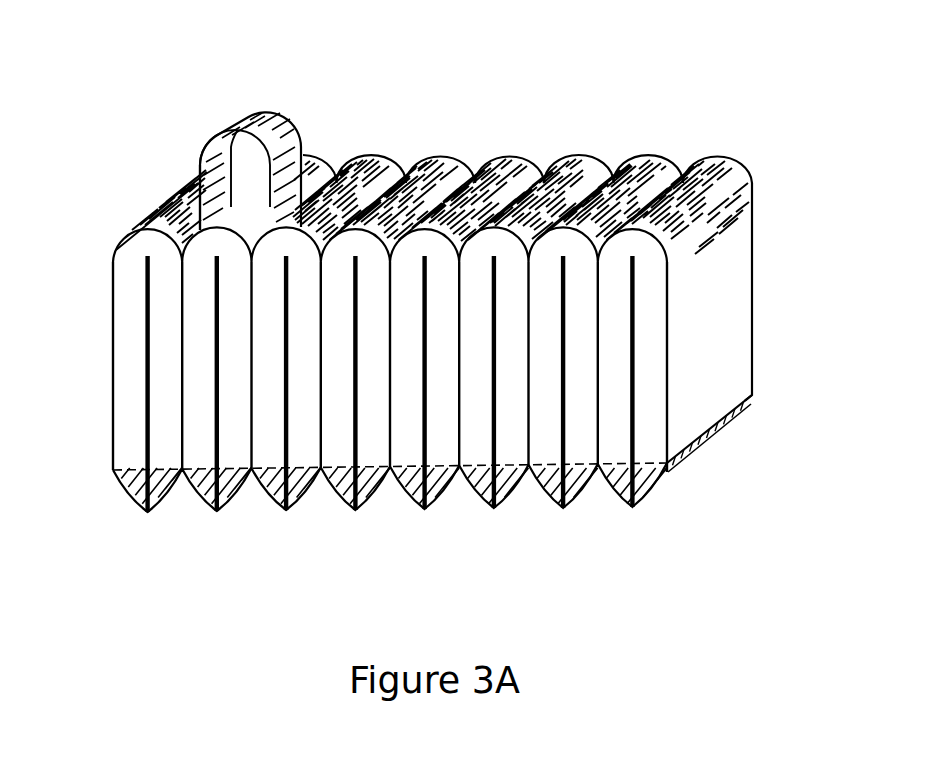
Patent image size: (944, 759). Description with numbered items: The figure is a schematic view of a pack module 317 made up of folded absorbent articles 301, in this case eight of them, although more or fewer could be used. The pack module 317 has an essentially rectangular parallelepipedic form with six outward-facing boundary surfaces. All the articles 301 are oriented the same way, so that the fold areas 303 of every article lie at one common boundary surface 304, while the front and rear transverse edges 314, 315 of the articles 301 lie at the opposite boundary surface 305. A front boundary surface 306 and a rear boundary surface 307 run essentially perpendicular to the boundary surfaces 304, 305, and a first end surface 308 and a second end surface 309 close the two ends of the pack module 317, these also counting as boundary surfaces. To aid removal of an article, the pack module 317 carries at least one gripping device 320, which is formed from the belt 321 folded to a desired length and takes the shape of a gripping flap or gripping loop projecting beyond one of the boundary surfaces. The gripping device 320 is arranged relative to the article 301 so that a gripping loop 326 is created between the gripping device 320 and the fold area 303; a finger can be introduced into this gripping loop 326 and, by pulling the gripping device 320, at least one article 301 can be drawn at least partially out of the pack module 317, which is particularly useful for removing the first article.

The absorbent article 301 is at (590, 157).
The fold area 303 is at (733, 157).
The boundary surface 304 is at (352, 162).
The opposite boundary surface 305 is at (497, 507).
The front boundary surface 306 is at (273, 378).
The rear boundary surface 307 is at (478, 150).
The first end surface 308 is at (113, 368).
The second end surface 309 is at (733, 253).
The front transverse edge 314 is at (655, 485).
The rear transverse edge 315 is at (620, 470).
The pack module 317 is at (441, 127).
The gripping device 320 is at (280, 117).
The belt 321 is at (213, 133).
The gripping loop 326 is at (200, 153).